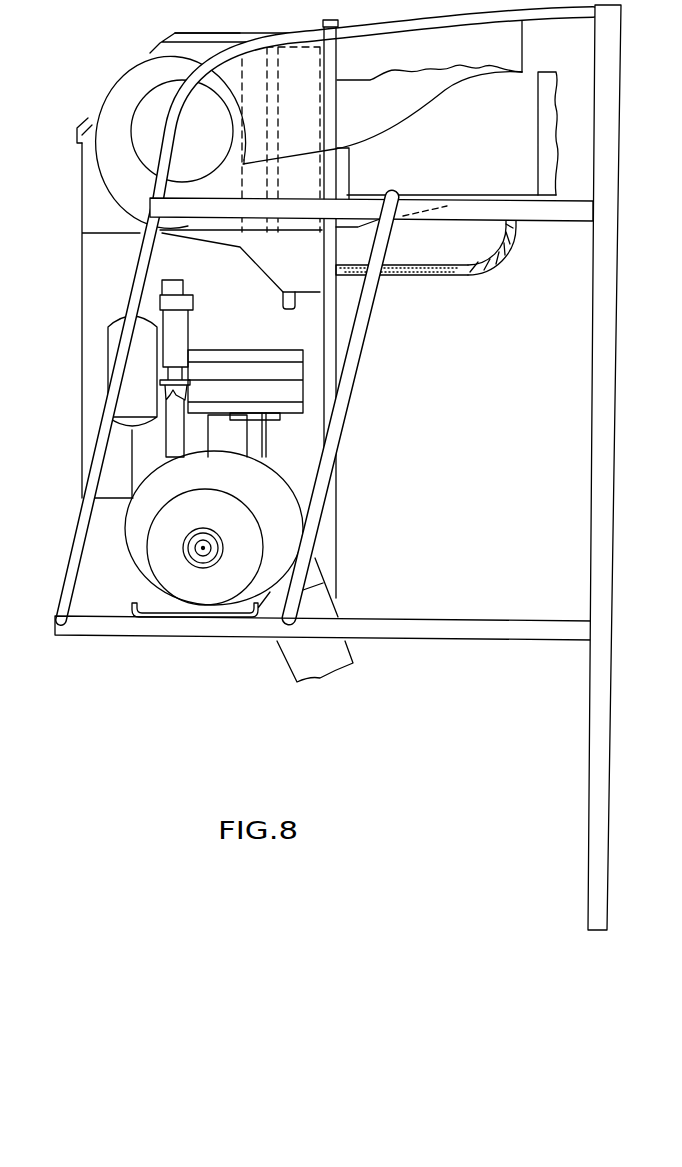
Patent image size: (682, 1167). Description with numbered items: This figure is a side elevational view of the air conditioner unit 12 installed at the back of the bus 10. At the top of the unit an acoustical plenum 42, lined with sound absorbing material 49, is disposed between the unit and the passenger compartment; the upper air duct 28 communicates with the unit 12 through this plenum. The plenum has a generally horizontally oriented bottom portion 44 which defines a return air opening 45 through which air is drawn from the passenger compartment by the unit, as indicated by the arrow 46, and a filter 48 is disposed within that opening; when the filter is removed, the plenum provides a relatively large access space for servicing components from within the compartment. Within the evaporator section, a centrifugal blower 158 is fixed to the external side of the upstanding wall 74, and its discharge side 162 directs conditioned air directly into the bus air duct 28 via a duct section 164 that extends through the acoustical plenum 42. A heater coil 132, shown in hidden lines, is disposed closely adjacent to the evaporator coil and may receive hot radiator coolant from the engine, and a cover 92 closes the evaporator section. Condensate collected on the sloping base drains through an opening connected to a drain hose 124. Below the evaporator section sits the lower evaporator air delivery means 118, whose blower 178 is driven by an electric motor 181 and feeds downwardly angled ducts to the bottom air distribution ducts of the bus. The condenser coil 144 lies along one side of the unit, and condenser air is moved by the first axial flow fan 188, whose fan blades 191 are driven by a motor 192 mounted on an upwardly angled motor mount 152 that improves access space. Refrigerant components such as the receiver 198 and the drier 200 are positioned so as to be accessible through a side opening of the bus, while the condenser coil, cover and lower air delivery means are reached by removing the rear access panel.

The bus 10 is at (614, 588).
The air conditioner unit 12 is at (142, 31).
The upper air duct 28 is at (558, 93).
The acoustical plenum 42 is at (523, 44).
The bottom portion 44 is at (427, 258).
The return air opening 45 is at (343, 265).
The arrow 46 is at (403, 304).
The filter 48 is at (437, 276).
The sound absorbing material 49 is at (520, 241).
The upstanding wall 74 is at (222, 45).
The cover 92 is at (200, 31).
The lower evaporator air delivery means 118 is at (120, 598).
The drain hose 124 is at (283, 300).
The heater coil 132 is at (270, 72).
The condenser coil 144 is at (82, 363).
The motor mount 152 is at (266, 433).
The centrifugal blower 158 is at (106, 90).
The discharge side 162 is at (351, 163).
The duct section 164 is at (403, 118).
The blower 178 is at (127, 565).
The electric motor 181 is at (207, 489).
The first axial flow fan 188 is at (256, 338).
The fan blades 191 is at (177, 430).
The motor 192 is at (270, 348).
The receiver 198 is at (107, 335).
The drier 200 is at (195, 320).